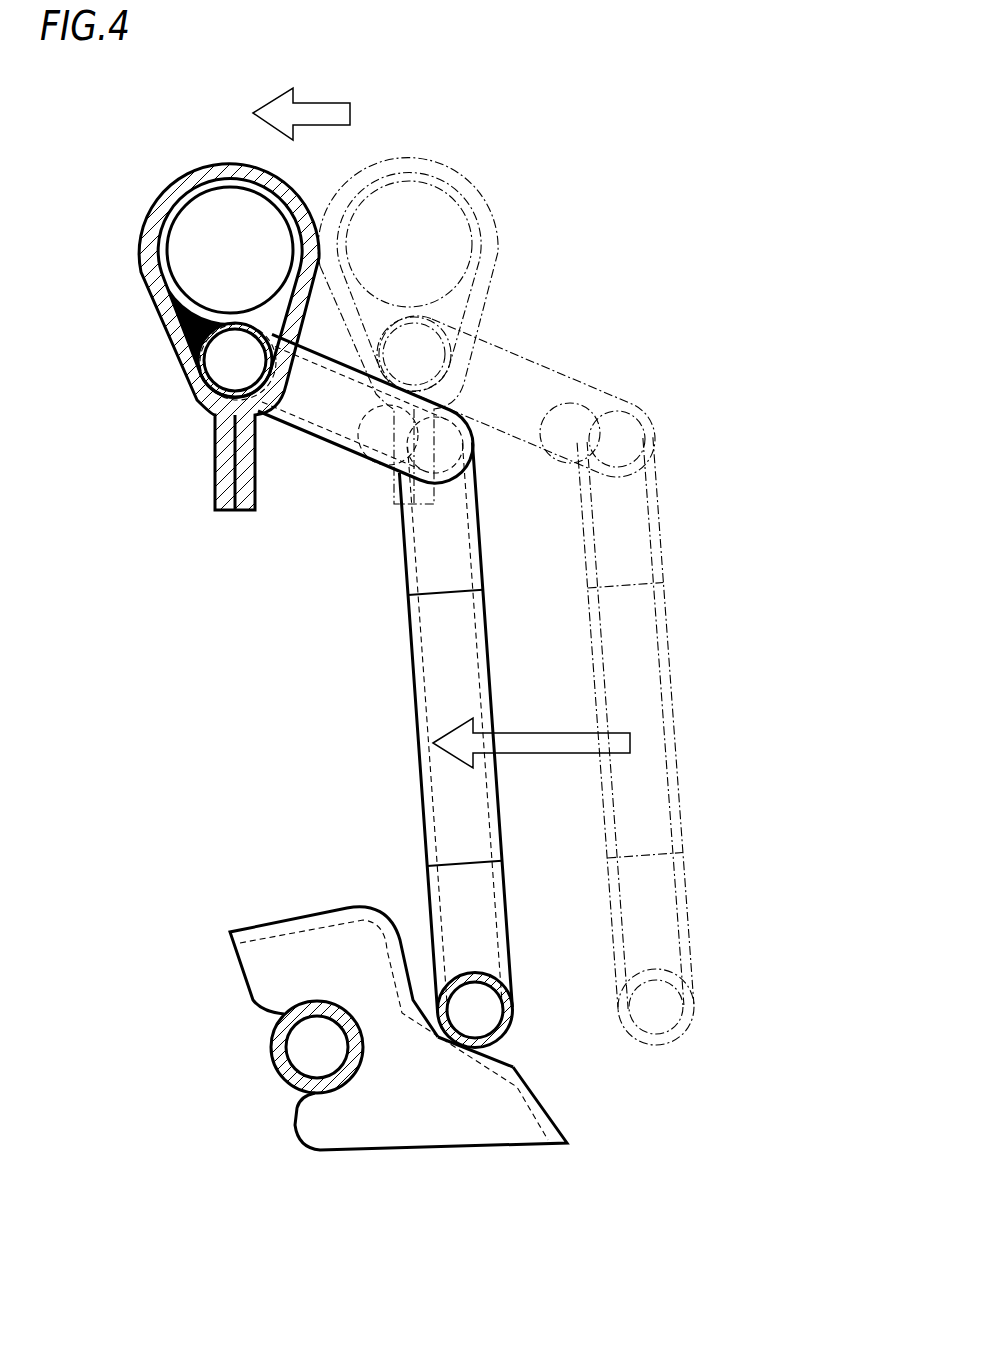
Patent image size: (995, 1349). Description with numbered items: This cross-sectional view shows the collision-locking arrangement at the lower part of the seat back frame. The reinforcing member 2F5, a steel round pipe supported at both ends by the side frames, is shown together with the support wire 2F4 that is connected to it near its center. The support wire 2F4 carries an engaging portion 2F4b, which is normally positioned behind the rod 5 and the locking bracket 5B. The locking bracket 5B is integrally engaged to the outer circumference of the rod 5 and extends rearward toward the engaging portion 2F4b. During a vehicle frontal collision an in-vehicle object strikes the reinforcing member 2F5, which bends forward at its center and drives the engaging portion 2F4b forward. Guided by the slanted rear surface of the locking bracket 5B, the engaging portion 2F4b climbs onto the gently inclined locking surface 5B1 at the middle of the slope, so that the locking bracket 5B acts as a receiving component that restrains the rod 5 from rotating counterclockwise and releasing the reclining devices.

The reinforcing member 2F5 is at (280, 187).
The support wire 2F4 is at (442, 553).
The engaging portion 2F4b is at (510, 1008).
The locking bracket 5B is at (308, 950).
The locking surface 5B1 is at (497, 1050).
The rod 5 is at (275, 1072).